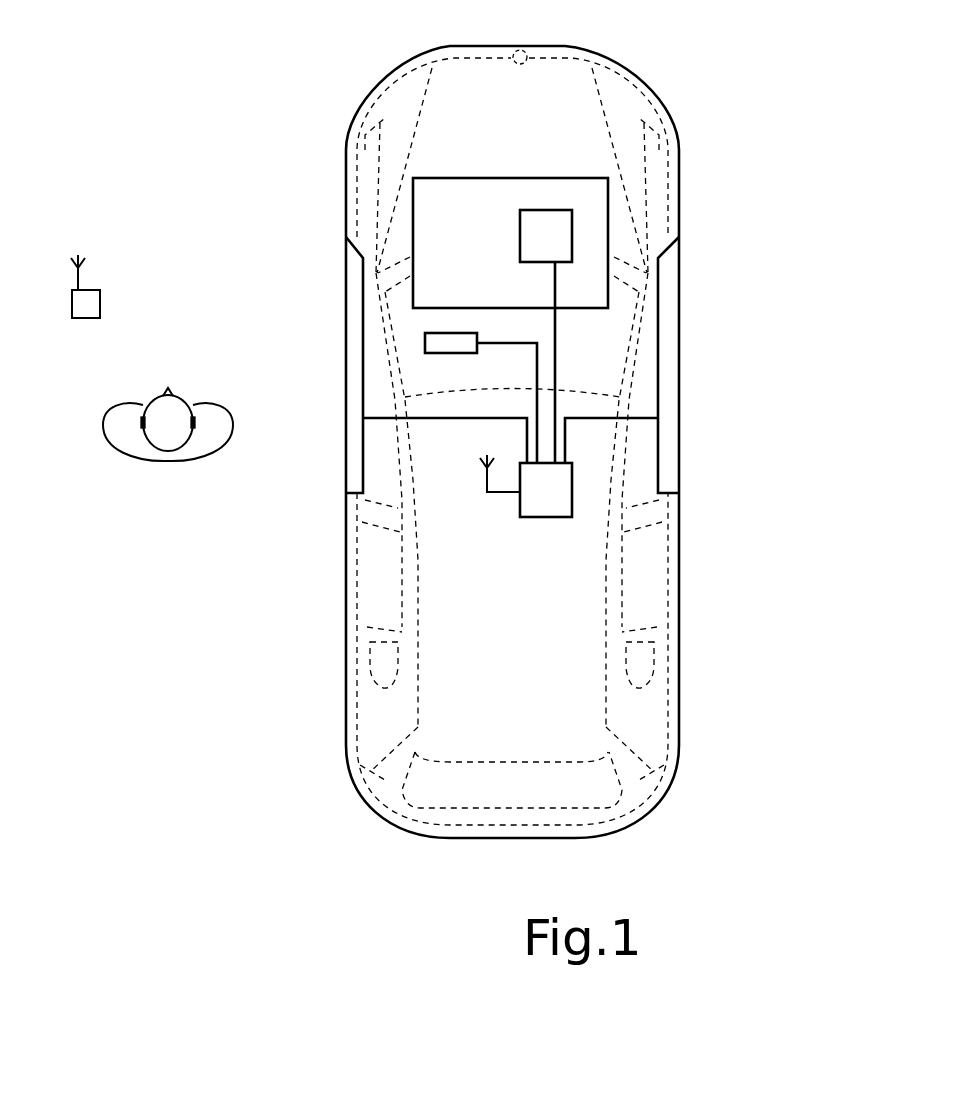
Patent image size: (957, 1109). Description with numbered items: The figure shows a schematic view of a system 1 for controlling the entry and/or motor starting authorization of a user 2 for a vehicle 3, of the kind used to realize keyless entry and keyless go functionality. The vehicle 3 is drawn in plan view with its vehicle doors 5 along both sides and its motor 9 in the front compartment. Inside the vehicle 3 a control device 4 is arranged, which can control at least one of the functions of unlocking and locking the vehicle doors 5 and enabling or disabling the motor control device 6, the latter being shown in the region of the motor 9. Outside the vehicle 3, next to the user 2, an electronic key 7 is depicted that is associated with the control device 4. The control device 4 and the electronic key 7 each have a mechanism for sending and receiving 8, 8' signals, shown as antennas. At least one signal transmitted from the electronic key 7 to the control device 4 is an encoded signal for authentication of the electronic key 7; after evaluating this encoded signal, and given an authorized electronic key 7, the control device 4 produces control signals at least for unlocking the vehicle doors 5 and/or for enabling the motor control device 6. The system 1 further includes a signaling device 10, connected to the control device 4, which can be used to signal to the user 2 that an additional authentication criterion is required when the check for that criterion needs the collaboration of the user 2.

The system 1 is at (616, 526).
The user 2 is at (200, 443).
The vehicle 3 is at (445, 787).
The control device 4 is at (540, 505).
The vehicle doors 5 is at (668, 313).
The motor control device 6 is at (547, 230).
The electronic key 7 is at (95, 290).
The mechanism for sending and receiving signals 8 is at (479, 505).
The mechanism for sending and receiving signals 8' is at (54, 304).
The motor 9 is at (557, 187).
The signaling device 10 is at (450, 345).